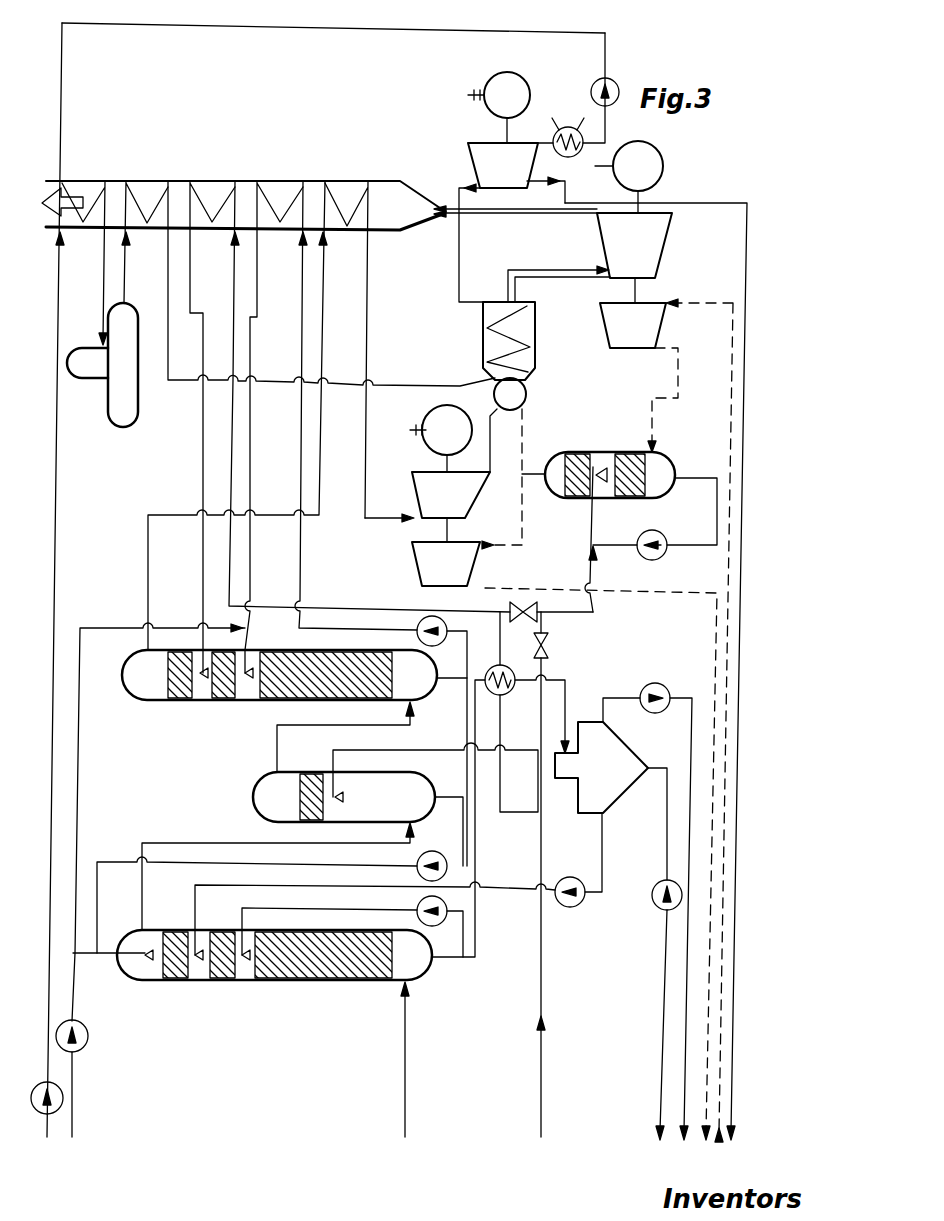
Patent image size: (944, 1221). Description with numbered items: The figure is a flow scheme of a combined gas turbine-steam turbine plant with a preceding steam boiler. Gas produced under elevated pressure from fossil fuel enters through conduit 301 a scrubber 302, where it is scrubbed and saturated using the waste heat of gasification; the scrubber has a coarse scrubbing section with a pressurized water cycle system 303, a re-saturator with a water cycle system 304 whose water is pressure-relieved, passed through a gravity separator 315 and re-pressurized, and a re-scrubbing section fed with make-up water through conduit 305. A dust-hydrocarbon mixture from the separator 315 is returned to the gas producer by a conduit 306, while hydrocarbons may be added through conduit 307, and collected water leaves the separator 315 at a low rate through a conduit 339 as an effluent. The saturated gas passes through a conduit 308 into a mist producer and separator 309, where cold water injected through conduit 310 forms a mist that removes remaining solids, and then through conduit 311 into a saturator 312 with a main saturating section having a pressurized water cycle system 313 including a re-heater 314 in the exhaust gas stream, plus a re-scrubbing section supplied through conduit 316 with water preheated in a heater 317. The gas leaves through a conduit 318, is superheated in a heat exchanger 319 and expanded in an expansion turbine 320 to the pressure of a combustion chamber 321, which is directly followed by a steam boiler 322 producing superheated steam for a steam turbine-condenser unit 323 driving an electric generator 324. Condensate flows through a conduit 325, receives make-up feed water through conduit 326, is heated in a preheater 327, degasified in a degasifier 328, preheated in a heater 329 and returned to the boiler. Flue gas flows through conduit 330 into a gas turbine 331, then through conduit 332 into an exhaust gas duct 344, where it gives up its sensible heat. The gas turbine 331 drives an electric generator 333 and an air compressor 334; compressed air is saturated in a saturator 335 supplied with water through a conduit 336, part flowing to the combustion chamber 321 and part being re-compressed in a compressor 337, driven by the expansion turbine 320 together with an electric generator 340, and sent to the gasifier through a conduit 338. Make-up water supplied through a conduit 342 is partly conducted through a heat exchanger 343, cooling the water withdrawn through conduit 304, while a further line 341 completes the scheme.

The conduit 301 is at (385, 1059).
The scrubber 302 is at (274, 955).
The pressurized water cycle system 303 is at (352, 926).
The water cycle system 304 is at (409, 821).
The conduit 305 is at (281, 826).
The conduit 306 is at (657, 954).
The conduit 307 is at (150, 868).
The conduit 308 is at (278, 871).
The mist producer and separator 309 is at (358, 819).
The conduit 310 is at (435, 753).
The conduit 311 is at (325, 737).
The saturator 312 is at (294, 675).
The pressurized water cycle system 313 is at (360, 523).
The re-heater 314 is at (274, 401).
The gravity separator 315 is at (601, 767).
The conduit 316 is at (377, 397).
The heater 317 is at (212, 401).
The conduit 318 is at (239, 415).
The heat exchanger 319 is at (348, 337).
The expansion turbine 320 is at (427, 507).
The combustion chamber 321 is at (525, 459).
The steam boiler 322 is at (487, 341).
The steam turbine-condenser unit 323 is at (512, 222).
The electric generator 324 is at (499, 107).
The conduit 325 is at (333, 205).
The conduit 326 is at (64, 580).
The preheater 327 is at (84, 249).
The degasifier 328 is at (102, 365).
The heater 329 is at (145, 228).
The conduit 330 is at (559, 272).
The gas turbine 331 is at (634, 258).
The conduit 332 is at (515, 224).
The electric generator 333 is at (638, 177).
The air compressor 334 is at (666, 720).
The saturator 335 is at (631, 501).
The conduit 336 is at (572, 539).
The compressor 337 is at (446, 564).
The conduit 338 is at (601, 864).
The conduit 339 is at (648, 911).
The electric generator 340 is at (441, 438).
The line 341 is at (656, 657).
The conduit 342 is at (518, 874).
The heat exchanger 343 is at (500, 784).
The exhaust gas duct 344 is at (241, 205).